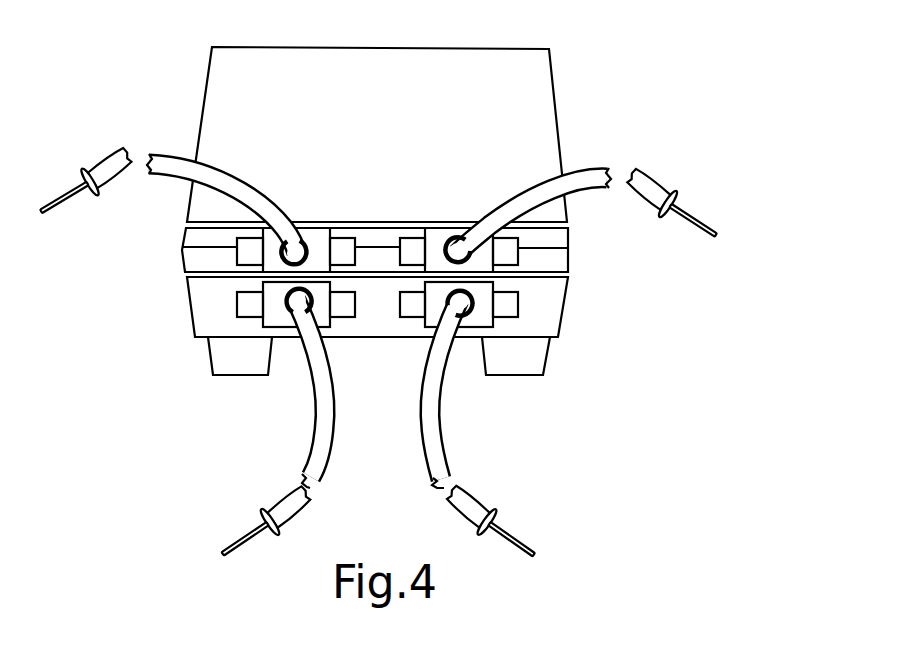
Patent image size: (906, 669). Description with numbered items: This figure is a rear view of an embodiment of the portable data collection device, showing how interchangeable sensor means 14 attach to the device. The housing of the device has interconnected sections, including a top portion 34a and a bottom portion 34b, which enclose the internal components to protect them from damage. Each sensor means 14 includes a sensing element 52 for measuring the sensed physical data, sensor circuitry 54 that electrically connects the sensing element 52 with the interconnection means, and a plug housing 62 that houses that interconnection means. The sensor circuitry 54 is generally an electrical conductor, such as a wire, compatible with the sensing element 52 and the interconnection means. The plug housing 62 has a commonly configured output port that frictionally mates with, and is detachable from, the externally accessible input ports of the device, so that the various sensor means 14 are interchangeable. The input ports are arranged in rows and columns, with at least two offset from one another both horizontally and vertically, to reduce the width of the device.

The sensor means 14 is at (697, 171).
The top portion 34a is at (557, 103).
The bottom portion 34b is at (565, 305).
The sensing element 52 is at (715, 235).
The sensor circuitry 54 is at (583, 187).
The plug housing 62 is at (472, 320).